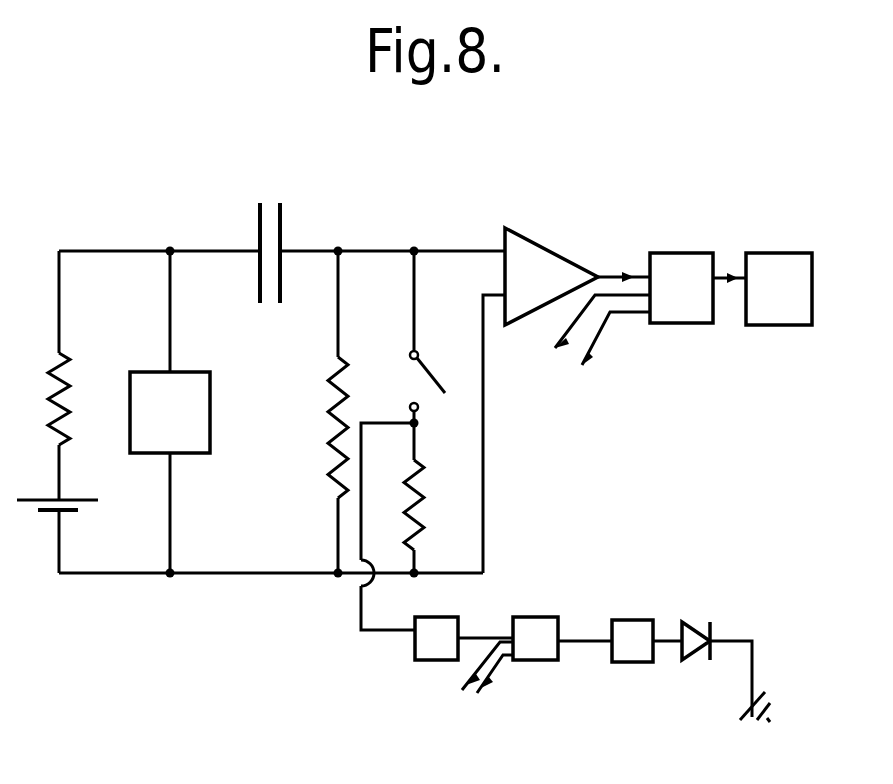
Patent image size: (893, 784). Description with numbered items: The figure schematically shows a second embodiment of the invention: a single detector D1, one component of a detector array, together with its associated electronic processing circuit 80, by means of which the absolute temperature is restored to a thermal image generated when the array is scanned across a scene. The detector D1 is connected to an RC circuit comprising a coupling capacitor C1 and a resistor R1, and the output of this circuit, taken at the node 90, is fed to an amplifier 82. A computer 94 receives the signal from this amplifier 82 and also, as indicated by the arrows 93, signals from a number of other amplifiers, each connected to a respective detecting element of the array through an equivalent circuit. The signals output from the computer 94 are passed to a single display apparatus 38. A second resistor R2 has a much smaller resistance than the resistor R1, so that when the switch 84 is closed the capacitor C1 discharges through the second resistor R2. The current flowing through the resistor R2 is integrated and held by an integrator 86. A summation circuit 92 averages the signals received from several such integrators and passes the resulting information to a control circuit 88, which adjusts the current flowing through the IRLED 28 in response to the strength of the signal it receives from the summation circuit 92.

The electronic processing circuit 80 is at (487, 155).
The node 90 is at (338, 251).
The coupling capacitor C1 is at (258, 222).
The detector D1 is at (210, 425).
The resistor R1 is at (327, 443).
The second resistor R2 is at (426, 485).
The switch 84 is at (445, 393).
The amplifier 82 is at (572, 258).
The arrows 93 is at (557, 338).
The computer 94 is at (698, 253).
The display apparatus 38 is at (793, 253).
The integrator 86 is at (430, 660).
The summation circuit 92 is at (535, 660).
The control circuit 88 is at (635, 662).
The IRLED 28 is at (690, 625).